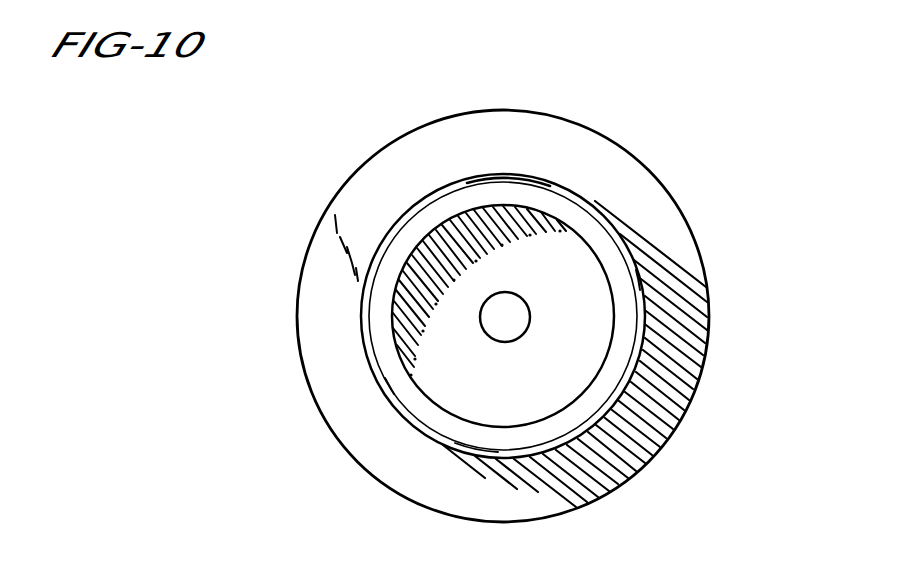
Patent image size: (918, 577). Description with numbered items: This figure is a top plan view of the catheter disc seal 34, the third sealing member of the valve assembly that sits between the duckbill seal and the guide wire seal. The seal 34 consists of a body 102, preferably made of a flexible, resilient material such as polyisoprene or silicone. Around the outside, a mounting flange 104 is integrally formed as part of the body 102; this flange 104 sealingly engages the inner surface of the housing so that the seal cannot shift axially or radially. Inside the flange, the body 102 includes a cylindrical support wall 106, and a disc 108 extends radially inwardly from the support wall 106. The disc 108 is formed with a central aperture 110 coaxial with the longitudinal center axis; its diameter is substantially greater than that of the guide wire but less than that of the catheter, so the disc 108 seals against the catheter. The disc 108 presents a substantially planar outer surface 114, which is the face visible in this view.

The catheter disc seal 34 is at (583, 110).
The body 102 is at (708, 288).
The mounting flange 104 is at (655, 200).
The cylindrical support wall 106 is at (600, 398).
The disc 108 is at (453, 389).
The aperture 110 is at (505, 342).
The outer surface 114 is at (590, 307).